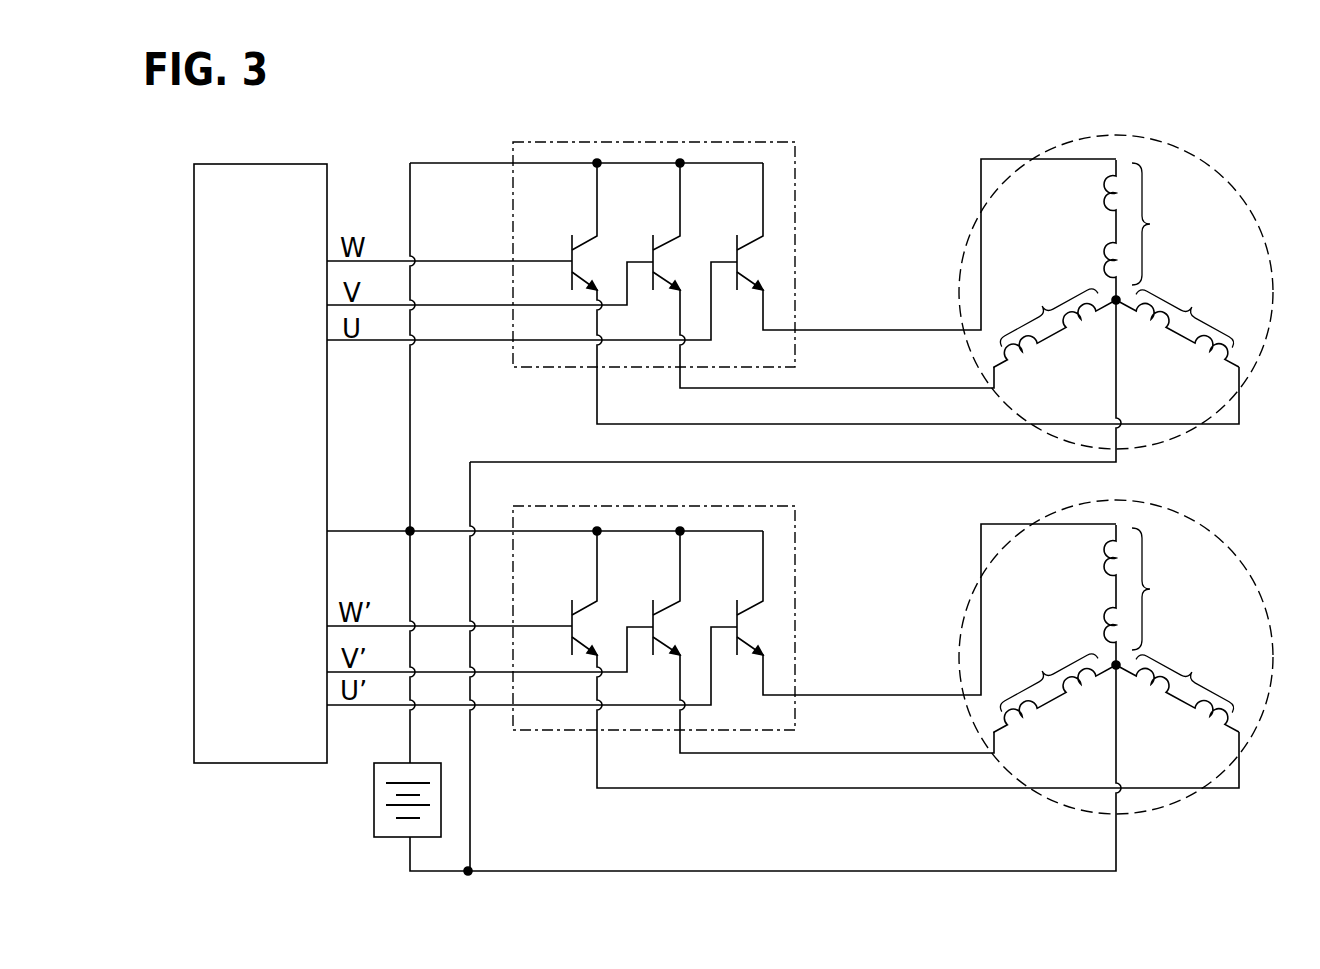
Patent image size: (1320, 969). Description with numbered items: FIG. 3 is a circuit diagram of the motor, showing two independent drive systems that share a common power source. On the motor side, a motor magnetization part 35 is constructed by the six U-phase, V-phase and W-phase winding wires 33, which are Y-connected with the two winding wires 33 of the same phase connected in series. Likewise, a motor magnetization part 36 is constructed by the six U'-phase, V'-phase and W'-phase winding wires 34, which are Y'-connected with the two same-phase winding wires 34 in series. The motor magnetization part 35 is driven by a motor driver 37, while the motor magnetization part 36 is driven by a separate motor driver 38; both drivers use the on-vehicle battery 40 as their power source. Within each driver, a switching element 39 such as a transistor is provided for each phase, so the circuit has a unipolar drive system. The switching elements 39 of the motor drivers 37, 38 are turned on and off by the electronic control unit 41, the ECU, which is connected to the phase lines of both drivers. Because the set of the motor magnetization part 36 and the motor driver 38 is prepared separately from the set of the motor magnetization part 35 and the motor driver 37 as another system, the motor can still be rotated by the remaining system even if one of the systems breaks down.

The winding wire 33 is at (1116, 289).
The winding wire 34 is at (1116, 654).
The motor magnetization part 35 is at (1243, 198).
The motor magnetization part 36 is at (1243, 563).
The motor driver 37 is at (795, 173).
The motor driver 38 is at (795, 539).
The switching element 39 is at (724, 252).
The on-vehicle battery 40 is at (374, 818).
The electronic control unit 41 is at (242, 764).